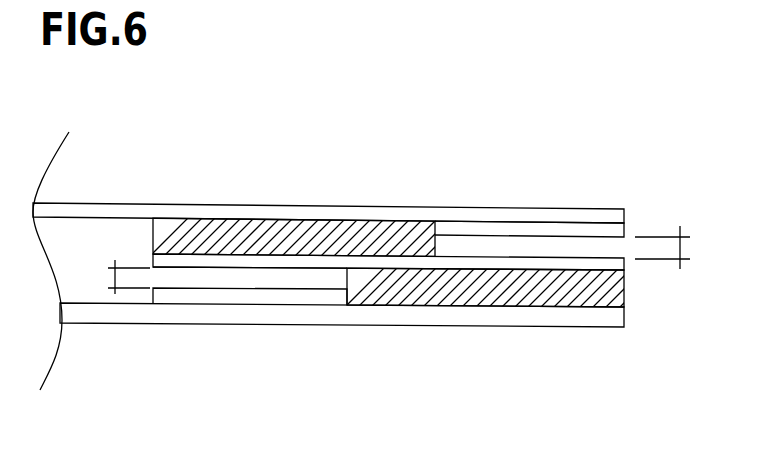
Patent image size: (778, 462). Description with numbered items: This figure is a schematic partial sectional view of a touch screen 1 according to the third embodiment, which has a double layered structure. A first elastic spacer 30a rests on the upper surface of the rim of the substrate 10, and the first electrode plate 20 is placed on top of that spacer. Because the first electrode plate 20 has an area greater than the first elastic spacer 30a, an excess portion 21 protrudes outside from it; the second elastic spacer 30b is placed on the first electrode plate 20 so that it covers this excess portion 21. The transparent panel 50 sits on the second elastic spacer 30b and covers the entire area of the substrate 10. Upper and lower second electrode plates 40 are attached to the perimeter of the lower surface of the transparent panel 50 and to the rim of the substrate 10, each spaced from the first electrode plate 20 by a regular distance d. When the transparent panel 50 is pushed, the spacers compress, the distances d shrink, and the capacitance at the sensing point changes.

The touch screen 1 is at (382, 218).
The substrate 10 is at (342, 318).
The first electrode plate 20 is at (560, 265).
The excess portion 21 is at (238, 260).
The first elastic spacer 30a is at (573, 293).
The second elastic spacer 30b is at (222, 232).
The second electrode plates 40 is at (515, 229).
The transparent panel 50 is at (362, 208).